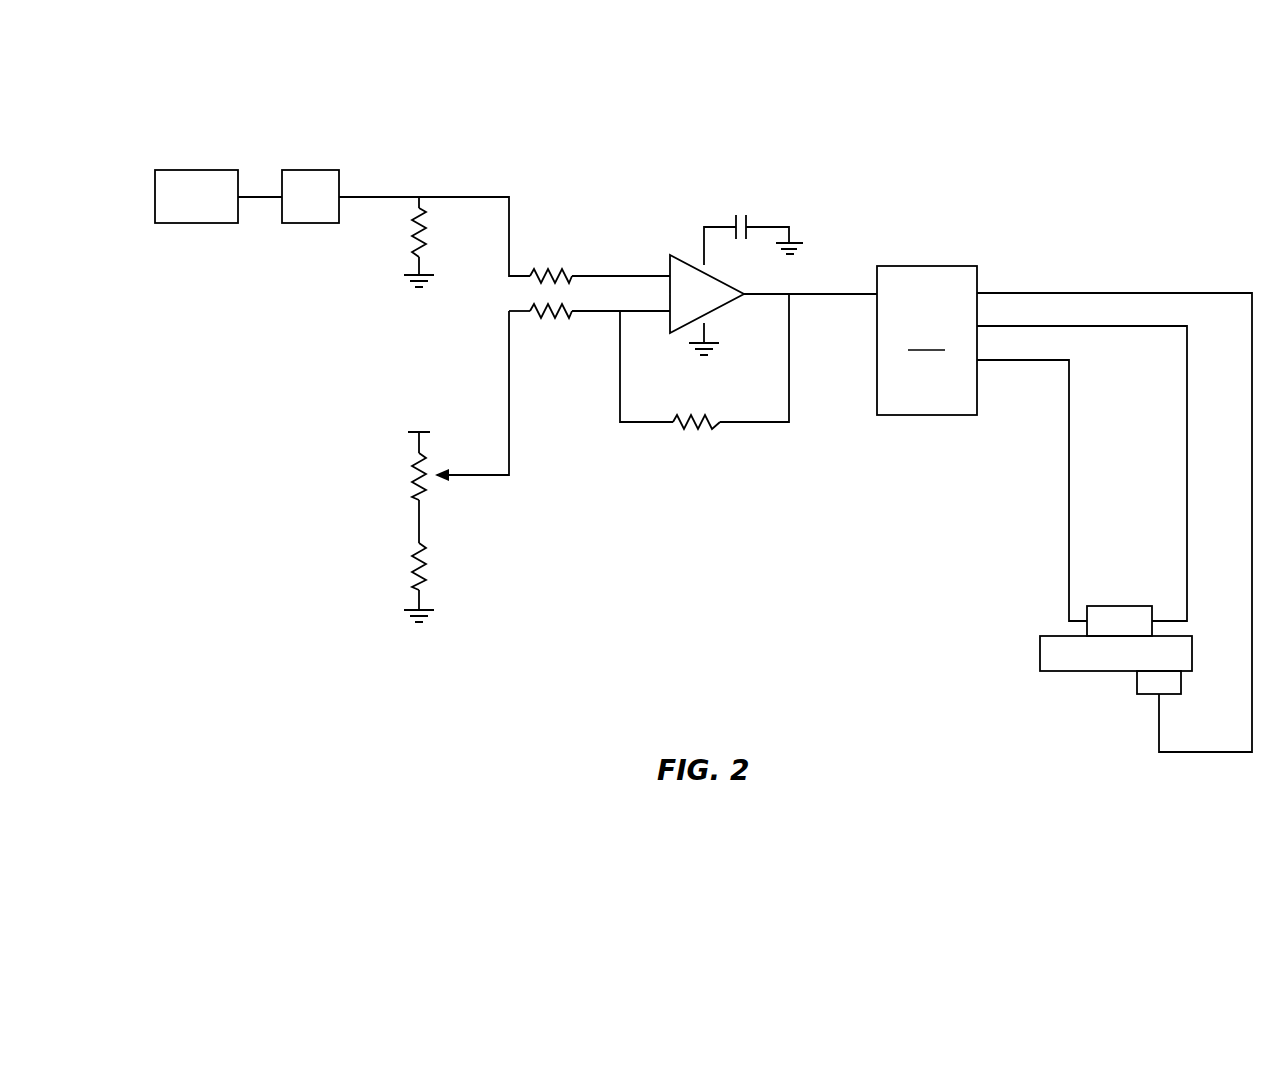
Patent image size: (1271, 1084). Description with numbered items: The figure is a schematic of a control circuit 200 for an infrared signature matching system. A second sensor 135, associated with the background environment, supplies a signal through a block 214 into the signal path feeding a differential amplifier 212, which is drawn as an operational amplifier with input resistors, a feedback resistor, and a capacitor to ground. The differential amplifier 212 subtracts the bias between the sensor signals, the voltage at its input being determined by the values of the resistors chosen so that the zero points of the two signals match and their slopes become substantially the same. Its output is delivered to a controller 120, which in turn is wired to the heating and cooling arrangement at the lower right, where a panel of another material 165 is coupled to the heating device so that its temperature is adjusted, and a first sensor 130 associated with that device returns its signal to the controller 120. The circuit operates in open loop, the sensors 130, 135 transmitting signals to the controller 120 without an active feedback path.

The control circuit 200 is at (885, 86).
The second sensor 135 is at (192, 224).
The voltage regulator 214 is at (303, 170).
The differential amplifier 212 is at (688, 203).
The controller 120 is at (927, 340).
The another material 165 is at (1040, 655).
The first sensor 130 is at (1137, 681).